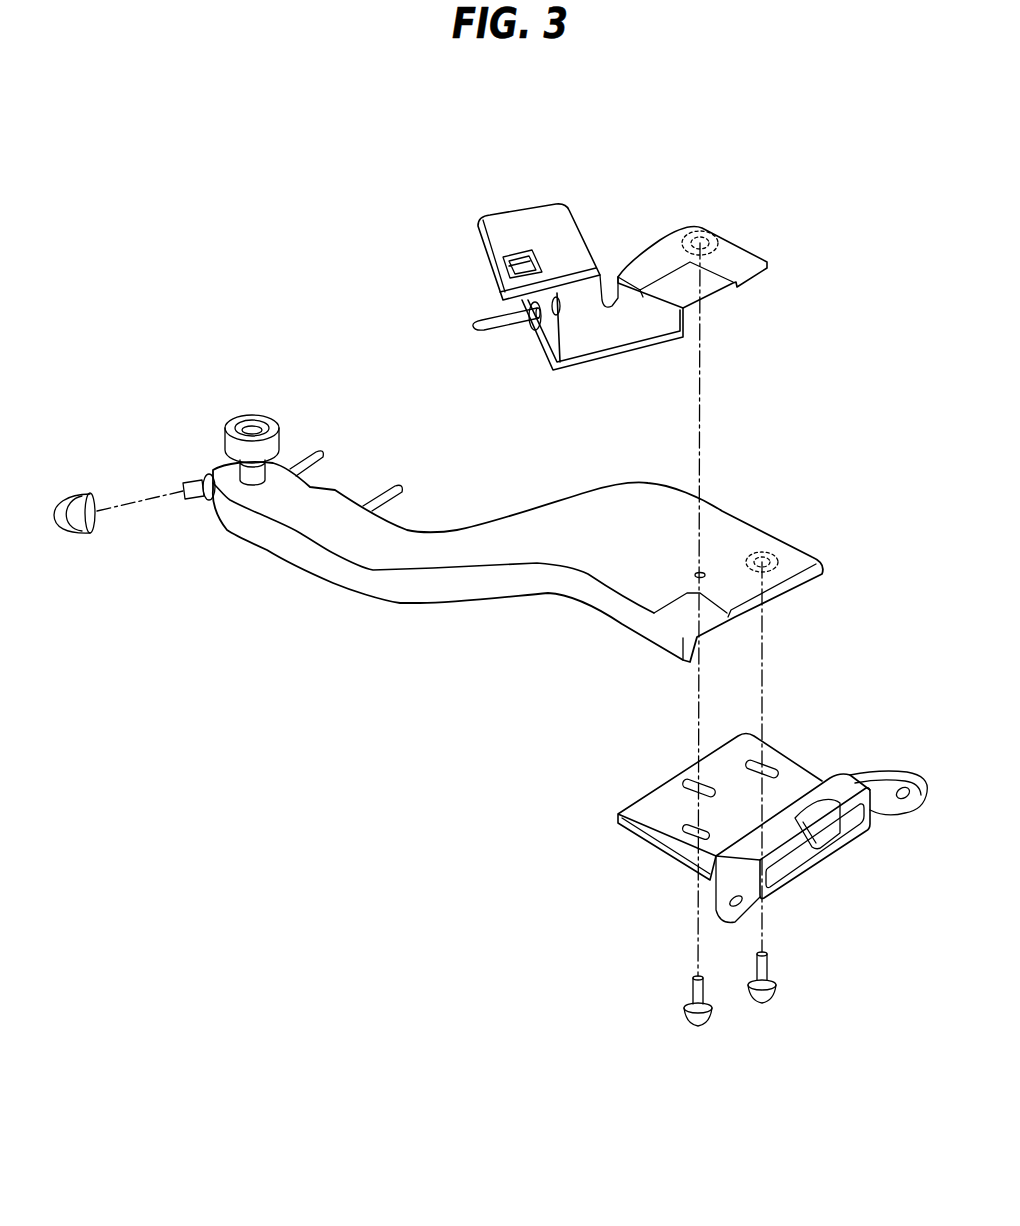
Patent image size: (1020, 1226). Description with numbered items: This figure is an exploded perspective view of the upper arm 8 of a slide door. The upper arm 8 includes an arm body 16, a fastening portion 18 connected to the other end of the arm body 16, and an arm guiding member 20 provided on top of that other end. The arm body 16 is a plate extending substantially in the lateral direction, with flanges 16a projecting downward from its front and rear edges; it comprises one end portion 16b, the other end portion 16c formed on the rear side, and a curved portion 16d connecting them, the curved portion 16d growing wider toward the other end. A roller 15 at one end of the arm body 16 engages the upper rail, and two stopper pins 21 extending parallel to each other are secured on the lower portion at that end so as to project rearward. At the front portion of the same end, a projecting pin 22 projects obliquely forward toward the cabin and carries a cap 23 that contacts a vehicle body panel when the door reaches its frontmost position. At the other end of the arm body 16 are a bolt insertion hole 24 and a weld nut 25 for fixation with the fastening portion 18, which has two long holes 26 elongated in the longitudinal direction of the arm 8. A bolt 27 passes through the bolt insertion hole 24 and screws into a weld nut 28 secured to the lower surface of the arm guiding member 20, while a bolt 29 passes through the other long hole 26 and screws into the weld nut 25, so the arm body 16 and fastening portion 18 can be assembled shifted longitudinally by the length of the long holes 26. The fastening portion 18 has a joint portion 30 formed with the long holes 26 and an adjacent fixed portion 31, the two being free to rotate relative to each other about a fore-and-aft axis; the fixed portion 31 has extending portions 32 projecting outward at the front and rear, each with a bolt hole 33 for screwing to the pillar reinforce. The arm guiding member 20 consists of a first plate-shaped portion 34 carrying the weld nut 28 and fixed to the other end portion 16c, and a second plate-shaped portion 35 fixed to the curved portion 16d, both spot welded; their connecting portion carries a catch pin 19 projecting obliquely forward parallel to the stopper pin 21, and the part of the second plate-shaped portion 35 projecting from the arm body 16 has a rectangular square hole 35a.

The upper arm 8 is at (340, 732).
The roller 15 is at (253, 426).
The arm body 16 is at (445, 553).
The flanges 16a is at (535, 583).
The one end portion 16b is at (237, 552).
The other end portion 16c is at (767, 498).
The curved portion 16d is at (517, 495).
The fastening portion 18 is at (774, 866).
The catch pin 19 is at (497, 330).
The arm guiding member 20 is at (588, 257).
The stopper pins 21 is at (315, 452).
The projecting pin 22 is at (205, 480).
The cap 23 is at (78, 492).
The bolt insertion hole 24 is at (695, 576).
The weld nut 25 is at (785, 552).
The long holes 26 is at (686, 782).
The bolt 27 is at (700, 1027).
The weld nut 28 is at (706, 236).
The bolt 29 is at (770, 1004).
The joint portion 30 is at (720, 757).
The fixed portion 31 is at (800, 850).
The extending portions 32 is at (908, 770).
The bolt hole 33 is at (908, 810).
The first plate-shaped portion 34 is at (662, 258).
The second plate-shaped portion 35 is at (508, 220).
The square hole 35a is at (502, 266).